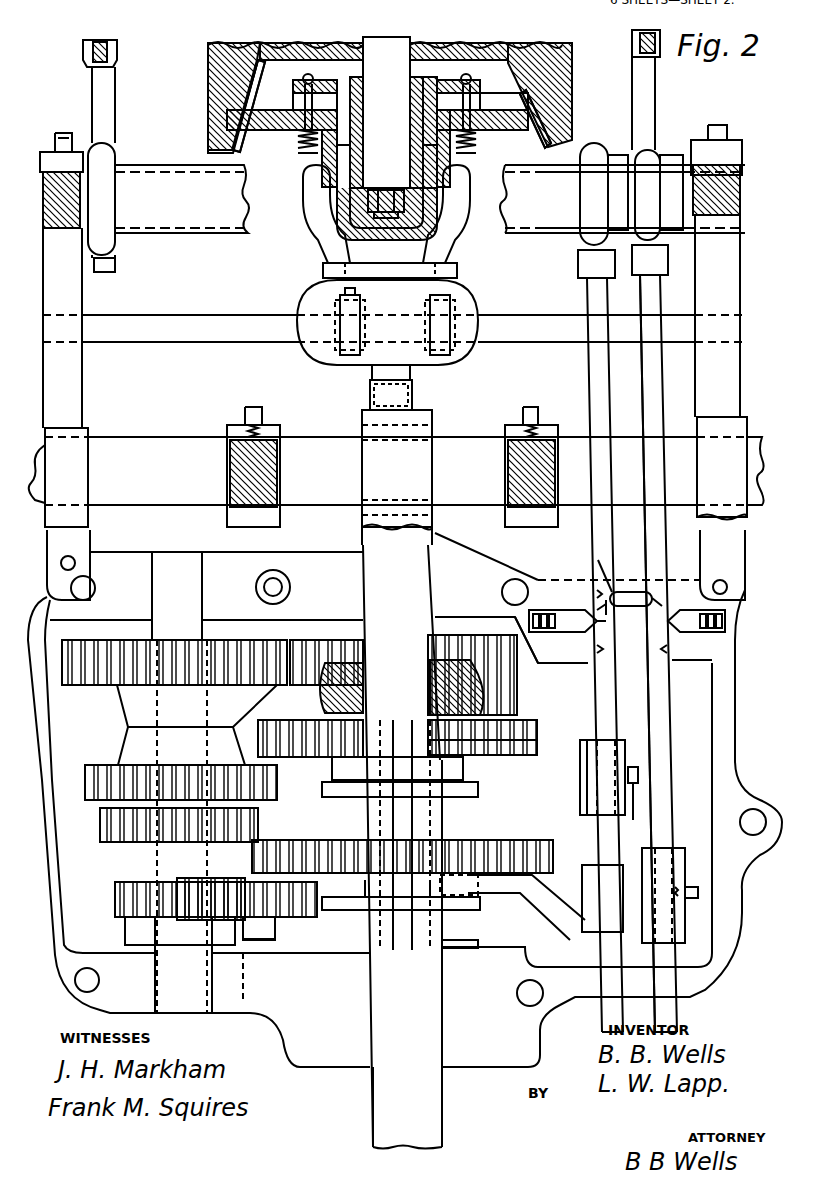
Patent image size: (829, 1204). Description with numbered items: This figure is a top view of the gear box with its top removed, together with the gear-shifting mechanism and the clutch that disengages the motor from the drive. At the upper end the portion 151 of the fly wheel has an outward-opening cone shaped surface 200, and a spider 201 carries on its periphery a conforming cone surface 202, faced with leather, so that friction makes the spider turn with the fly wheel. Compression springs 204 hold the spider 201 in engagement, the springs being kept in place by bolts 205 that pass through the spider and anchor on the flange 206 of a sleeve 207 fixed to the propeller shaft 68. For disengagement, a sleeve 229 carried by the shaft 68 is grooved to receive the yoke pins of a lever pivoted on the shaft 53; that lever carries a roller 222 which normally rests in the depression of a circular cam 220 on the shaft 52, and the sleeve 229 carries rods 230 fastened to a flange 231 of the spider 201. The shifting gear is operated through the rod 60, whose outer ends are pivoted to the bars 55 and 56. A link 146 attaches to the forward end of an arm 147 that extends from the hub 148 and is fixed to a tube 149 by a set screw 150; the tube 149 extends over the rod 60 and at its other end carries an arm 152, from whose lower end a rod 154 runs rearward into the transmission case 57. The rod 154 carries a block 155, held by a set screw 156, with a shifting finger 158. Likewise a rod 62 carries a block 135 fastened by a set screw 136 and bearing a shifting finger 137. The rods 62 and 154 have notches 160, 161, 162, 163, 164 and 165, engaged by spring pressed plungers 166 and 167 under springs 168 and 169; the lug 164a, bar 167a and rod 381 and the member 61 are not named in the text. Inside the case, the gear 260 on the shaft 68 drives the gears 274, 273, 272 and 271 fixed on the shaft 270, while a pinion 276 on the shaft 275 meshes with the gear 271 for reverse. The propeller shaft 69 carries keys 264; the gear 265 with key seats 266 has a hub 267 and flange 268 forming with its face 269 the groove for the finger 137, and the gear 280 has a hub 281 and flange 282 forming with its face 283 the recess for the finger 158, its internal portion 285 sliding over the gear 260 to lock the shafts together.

The link 146 is at (106, 40).
The arm 147 is at (115, 100).
The hub 148 is at (118, 155).
The tube 149 is at (196, 228).
The set screw 150 is at (106, 272).
The portion of fly wheel 151 is at (581, 75).
The cone shaped surface 200 is at (257, 67).
The spider 201 is at (279, 111).
The cone surface 202 is at (240, 140).
The compression springs 204 is at (300, 140).
The bolts 205 is at (503, 101).
The flange 206 is at (438, 83).
The sleeve 207 is at (437, 218).
The sleeve 229 is at (323, 272).
The rods 230 is at (303, 225).
The flange 231 is at (515, 193).
The shaft 53 is at (525, 315).
The bar 55 is at (82, 378).
The bar 56 is at (745, 372).
The rod 60 is at (742, 185).
The rod 61 is at (659, 591).
The arm 152 is at (580, 247).
The rod 154 is at (588, 375).
The propeller shaft portion 68 is at (440, 372).
The roller 222 is at (368, 406).
The circular cam 220 is at (434, 430).
The shaft 52 is at (404, 471).
The transmission case 57 is at (405, 800).
The shaft 270 is at (175, 1035).
The gear 274 is at (70, 685).
The gear 273 is at (95, 765).
The gear 272 is at (100, 835).
The gear 271 is at (115, 900).
The internal portion 285 is at (315, 745).
The hub 281 is at (332, 772).
The flange 282 is at (322, 792).
The gear 260 is at (517, 688).
The gear 280 is at (537, 725).
The face 283 is at (537, 745).
The keys 264 is at (442, 812).
The gear 265 is at (553, 845).
The face 269 is at (553, 858).
The key seats 266 is at (430, 885).
The hub 267 is at (335, 910).
The pinion 276 is at (300, 920).
The flange 268 is at (462, 911).
The shifting finger 137 is at (530, 895).
The shifting finger 158 is at (528, 780).
The block 155 is at (615, 740).
The set screw 156 is at (633, 800).
The rod 62 is at (664, 758).
The block 135 is at (685, 860).
The set screw 136 is at (700, 892).
The notch 160 is at (648, 592).
The notch 161 is at (668, 621).
The notch 162 is at (667, 648).
The notch 163 is at (597, 592).
The notch 164 is at (597, 621).
The lug 164a is at (606, 600).
The notch 165 is at (597, 648).
The spring pressed plunger 166 is at (568, 610).
The spring pressed plunger 167 is at (696, 621).
The bar 167a is at (652, 598).
The spring 168 is at (528, 640).
The spring 169 is at (725, 622).
The rod 381 is at (598, 560).
The shaft 275 is at (250, 1013).
The propeller shaft 69 is at (432, 1095).